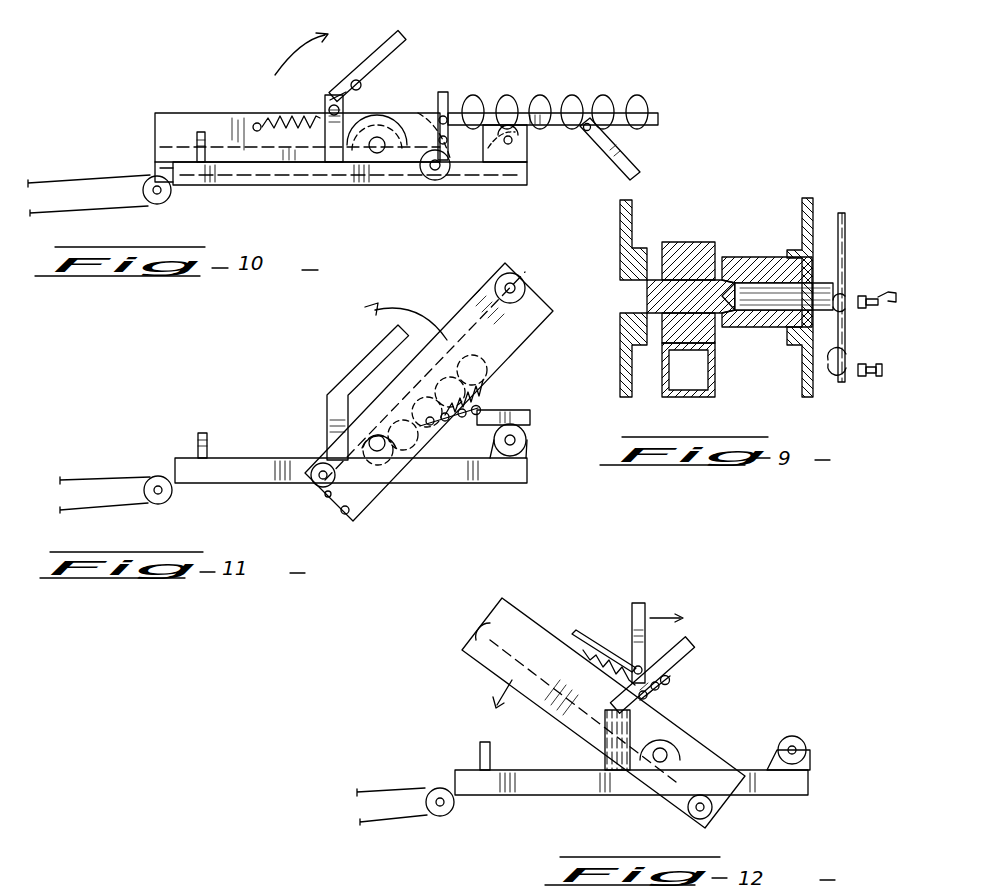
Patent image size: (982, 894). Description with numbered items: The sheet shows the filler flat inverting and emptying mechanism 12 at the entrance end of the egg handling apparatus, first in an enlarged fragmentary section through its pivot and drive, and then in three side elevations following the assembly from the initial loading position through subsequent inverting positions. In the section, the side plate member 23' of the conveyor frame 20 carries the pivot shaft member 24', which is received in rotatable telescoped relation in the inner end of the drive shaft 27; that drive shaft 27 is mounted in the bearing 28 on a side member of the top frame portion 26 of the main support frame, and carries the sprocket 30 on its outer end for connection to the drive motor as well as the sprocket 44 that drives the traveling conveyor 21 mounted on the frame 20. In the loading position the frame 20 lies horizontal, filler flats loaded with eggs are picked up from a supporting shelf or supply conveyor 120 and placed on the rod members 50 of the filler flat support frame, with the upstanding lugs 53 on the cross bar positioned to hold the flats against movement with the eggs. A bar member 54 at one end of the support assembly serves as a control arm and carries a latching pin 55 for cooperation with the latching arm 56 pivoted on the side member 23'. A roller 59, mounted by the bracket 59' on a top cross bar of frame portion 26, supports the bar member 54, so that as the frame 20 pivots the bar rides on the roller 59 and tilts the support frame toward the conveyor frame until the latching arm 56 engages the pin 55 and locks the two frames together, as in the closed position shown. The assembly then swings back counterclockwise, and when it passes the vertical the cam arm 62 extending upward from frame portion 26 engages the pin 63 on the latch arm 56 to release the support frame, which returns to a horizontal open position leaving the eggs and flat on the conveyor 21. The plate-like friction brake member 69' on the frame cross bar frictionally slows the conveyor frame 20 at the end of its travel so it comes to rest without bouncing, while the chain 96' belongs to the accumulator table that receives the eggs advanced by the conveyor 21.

In FIG. 10, the filler flat inverting and emptying mechanism 12 is at (228, 80).
In FIG. 11, the filler flat inverting and emptying mechanism 12 is at (552, 295).
In FIG. 12, the filler flat inverting and emptying mechanism 12 is at (580, 612).
In FIG. 10, the conveyor frame 20 is at (155, 120).
In FIG. 11, the conveyor frame 20 is at (542, 316).
In FIG. 12, the conveyor frame 20 is at (497, 610).
In FIG. 9, the traveling conveyor 21 is at (868, 378).
In FIG. 9, the side plate member 23' is at (860, 294).
In FIG. 9, the pivot shaft member 24' is at (766, 284).
In FIG. 10, the top frame portion 26 is at (358, 186).
In FIG. 9, the top frame portion 26 is at (715, 372).
In FIG. 11, the top frame portion 26 is at (500, 477).
In FIG. 12, the top frame portion 26 is at (518, 785).
In FIG. 9, the drive shaft 27 is at (732, 262).
In FIG. 9, the bearing 28 is at (688, 242).
In FIG. 9, the sprocket 30 is at (620, 232).
In FIG. 9, the sprocket 44 is at (814, 206).
In FIG. 12, the rod member 50 is at (592, 644).
In FIG. 10, the upstanding finger or lug 53 is at (448, 100).
In FIG. 10, the bar member 54 is at (612, 158).
In FIG. 11, the bar member 54 is at (518, 412).
In FIG. 12, the bar member 54 is at (645, 612).
In FIG. 10, the latching pin 55 is at (586, 131).
In FIG. 11, the latching pin 55 is at (468, 425).
In FIG. 12, the latching pin 55 is at (642, 667).
In FIG. 10, the latching arm 56 is at (348, 92).
In FIG. 11, the latching arm 56 is at (482, 418).
In FIG. 12, the latching arm 56 is at (672, 690).
In FIG. 10, the roller 59 is at (520, 143).
In FIG. 11, the roller 59 is at (529, 440).
In FIG. 12, the roller 59 is at (808, 735).
In FIG. 12, the bracket 59' is at (812, 755).
In FIG. 10, the cam arm 62 is at (382, 60).
In FIG. 11, the cam arm 62 is at (378, 356).
In FIG. 12, the cam arm 62 is at (690, 646).
In FIG. 10, the pin 63 is at (362, 86).
In FIG. 12, the pin 63 is at (670, 678).
In FIG. 10, the friction brake member 69' is at (184, 121).
In FIG. 11, the friction brake member 69' is at (152, 462).
In FIG. 10, the chain 96' is at (100, 182).
In FIG. 10, the supporting shelf or supply conveyor 120 is at (645, 122).